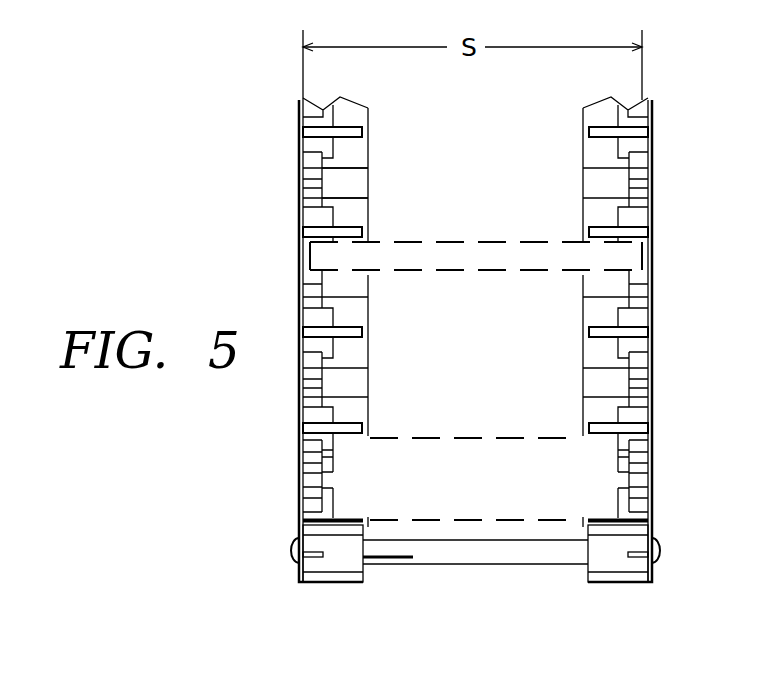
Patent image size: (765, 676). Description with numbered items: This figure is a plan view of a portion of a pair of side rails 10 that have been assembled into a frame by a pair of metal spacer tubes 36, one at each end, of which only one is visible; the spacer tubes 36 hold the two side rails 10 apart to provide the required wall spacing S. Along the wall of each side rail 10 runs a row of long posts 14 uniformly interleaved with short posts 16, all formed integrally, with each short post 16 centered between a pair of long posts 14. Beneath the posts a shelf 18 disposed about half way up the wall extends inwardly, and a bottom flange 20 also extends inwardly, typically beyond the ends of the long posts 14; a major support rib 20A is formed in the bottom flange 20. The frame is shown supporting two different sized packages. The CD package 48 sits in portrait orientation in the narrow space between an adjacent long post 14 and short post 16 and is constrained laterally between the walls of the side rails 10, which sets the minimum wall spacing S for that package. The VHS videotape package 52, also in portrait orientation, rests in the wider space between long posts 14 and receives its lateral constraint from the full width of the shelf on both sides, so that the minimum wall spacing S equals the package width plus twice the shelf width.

The side rail 10 is at (335, 609).
The long post 14 is at (348, 131).
The short post 16 is at (318, 236).
The shelf 18 is at (322, 92).
The bottom flange 20 is at (358, 152).
The major support rib 20A is at (372, 180).
The metal spacer tube 36 is at (473, 553).
The CD package 48 is at (523, 252).
The VHS videotape package 52 is at (487, 490).